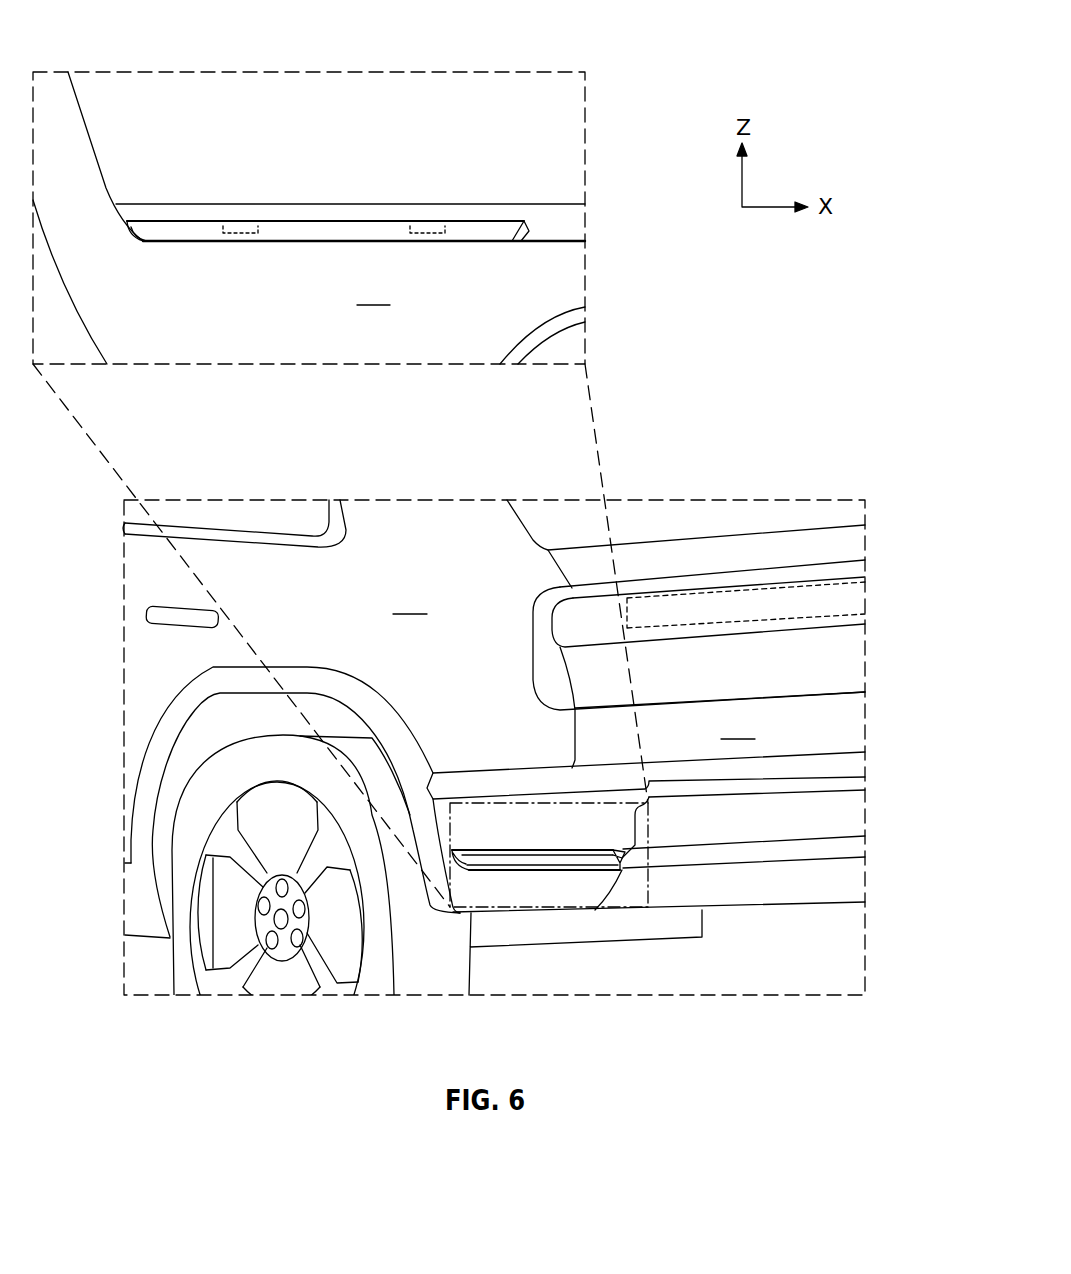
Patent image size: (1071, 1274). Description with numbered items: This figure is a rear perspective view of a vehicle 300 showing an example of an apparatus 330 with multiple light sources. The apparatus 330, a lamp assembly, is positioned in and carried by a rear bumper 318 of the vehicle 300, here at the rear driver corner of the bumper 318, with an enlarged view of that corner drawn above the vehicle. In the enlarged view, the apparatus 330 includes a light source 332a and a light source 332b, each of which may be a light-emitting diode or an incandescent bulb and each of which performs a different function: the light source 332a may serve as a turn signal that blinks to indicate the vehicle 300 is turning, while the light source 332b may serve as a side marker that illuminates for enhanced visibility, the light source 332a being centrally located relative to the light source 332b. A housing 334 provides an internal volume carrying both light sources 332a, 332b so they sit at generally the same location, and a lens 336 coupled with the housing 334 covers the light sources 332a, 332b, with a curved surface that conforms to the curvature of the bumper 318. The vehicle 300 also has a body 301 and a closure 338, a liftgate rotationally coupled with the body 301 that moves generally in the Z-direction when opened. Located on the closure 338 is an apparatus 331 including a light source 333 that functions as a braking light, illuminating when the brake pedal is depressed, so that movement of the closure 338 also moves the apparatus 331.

The vehicle 300 is at (812, 407).
The body 301 is at (494, 786).
The bumper 318 is at (655, 930).
The apparatus 330 is at (517, 221).
The apparatus 331 is at (838, 572).
The light source 332a is at (428, 223).
The light source 332b is at (240, 223).
The light source 333 is at (853, 599).
The housing 334 is at (193, 221).
The lens 336 is at (175, 242).
The closure 338 is at (712, 707).